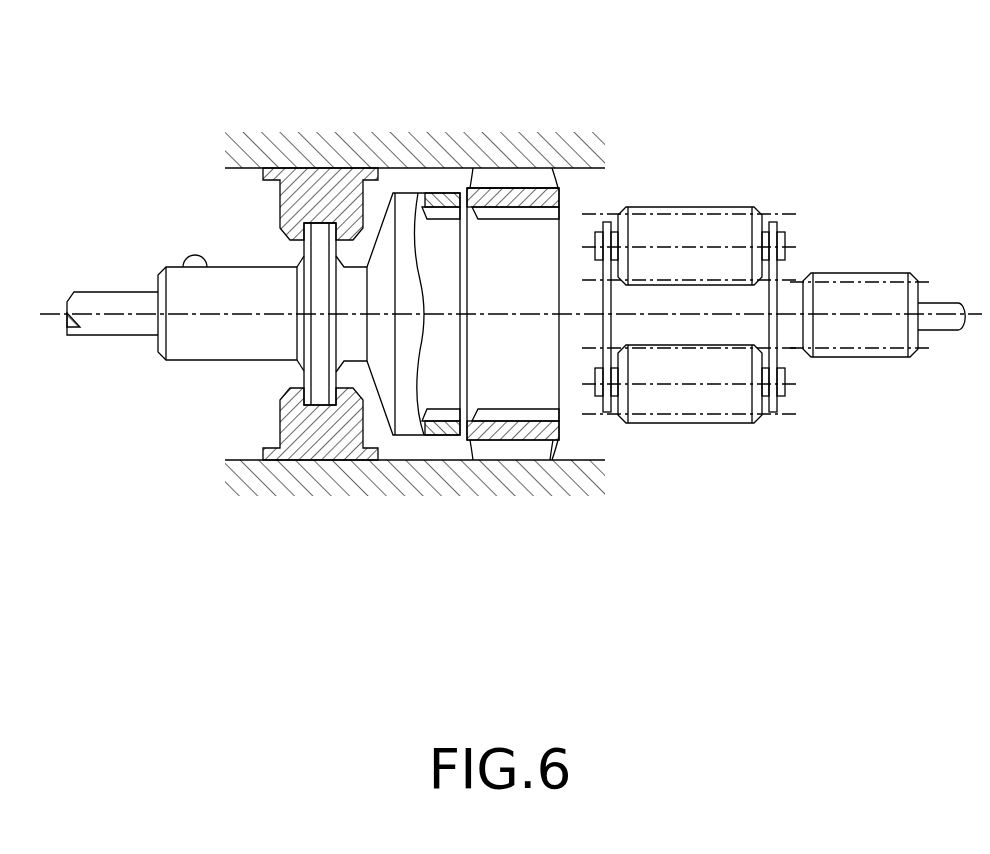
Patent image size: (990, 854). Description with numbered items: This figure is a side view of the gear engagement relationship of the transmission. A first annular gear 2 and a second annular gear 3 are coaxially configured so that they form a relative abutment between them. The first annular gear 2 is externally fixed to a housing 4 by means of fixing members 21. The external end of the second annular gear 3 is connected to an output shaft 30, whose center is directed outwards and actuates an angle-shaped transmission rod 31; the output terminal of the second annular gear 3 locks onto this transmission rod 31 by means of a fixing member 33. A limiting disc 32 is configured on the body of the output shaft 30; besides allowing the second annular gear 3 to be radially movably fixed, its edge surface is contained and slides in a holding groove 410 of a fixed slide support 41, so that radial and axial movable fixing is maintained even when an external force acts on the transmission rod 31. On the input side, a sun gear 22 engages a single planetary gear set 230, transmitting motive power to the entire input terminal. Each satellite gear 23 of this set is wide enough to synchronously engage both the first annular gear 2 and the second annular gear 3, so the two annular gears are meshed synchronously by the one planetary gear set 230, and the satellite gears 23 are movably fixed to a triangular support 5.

The housing 4 is at (440, 162).
The slide support 41 is at (320, 190).
The holding groove 410 is at (296, 221).
The fixing members 21 is at (530, 182).
The planetary gear set 230 is at (714, 305).
The fixing member 33 is at (192, 259).
The angle-shaped transmission rod 31 is at (112, 320).
The output shaft 30 is at (208, 343).
The limiting disc 32 is at (320, 343).
The second annular gear 3 is at (437, 427).
The first annular gear 2 is at (512, 437).
The satellite gears 23 is at (695, 397).
The triangular support 5 is at (772, 335).
The sun gear 22 is at (858, 332).